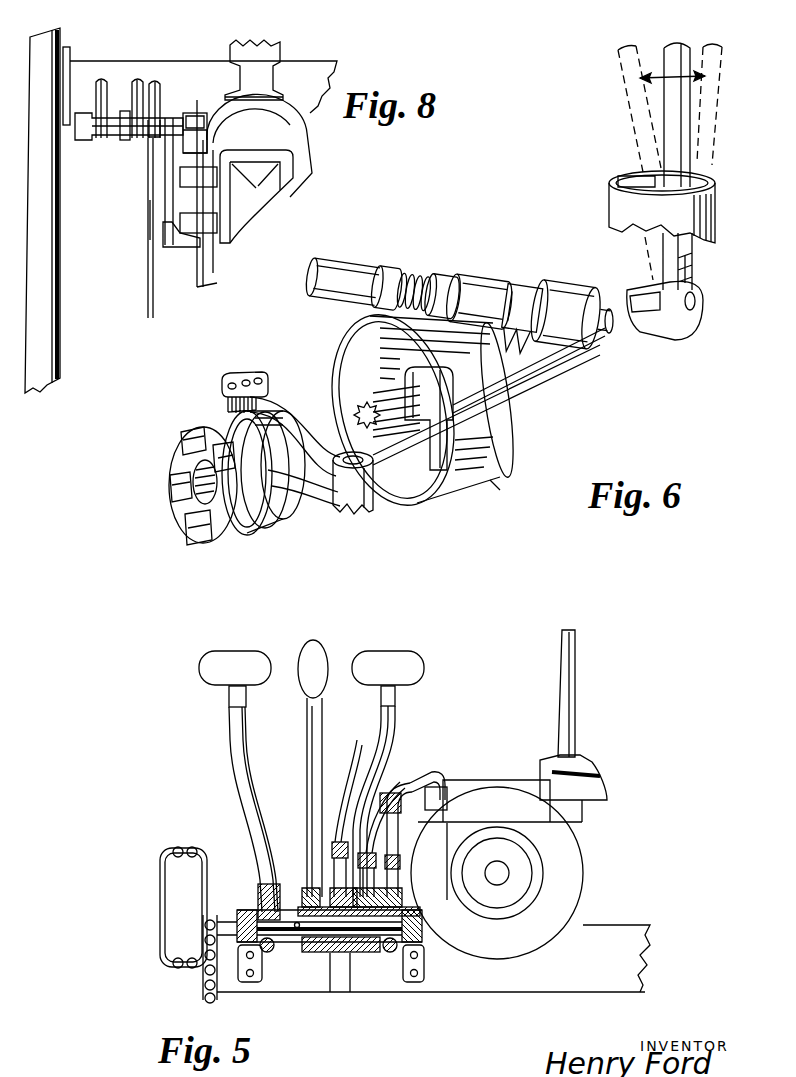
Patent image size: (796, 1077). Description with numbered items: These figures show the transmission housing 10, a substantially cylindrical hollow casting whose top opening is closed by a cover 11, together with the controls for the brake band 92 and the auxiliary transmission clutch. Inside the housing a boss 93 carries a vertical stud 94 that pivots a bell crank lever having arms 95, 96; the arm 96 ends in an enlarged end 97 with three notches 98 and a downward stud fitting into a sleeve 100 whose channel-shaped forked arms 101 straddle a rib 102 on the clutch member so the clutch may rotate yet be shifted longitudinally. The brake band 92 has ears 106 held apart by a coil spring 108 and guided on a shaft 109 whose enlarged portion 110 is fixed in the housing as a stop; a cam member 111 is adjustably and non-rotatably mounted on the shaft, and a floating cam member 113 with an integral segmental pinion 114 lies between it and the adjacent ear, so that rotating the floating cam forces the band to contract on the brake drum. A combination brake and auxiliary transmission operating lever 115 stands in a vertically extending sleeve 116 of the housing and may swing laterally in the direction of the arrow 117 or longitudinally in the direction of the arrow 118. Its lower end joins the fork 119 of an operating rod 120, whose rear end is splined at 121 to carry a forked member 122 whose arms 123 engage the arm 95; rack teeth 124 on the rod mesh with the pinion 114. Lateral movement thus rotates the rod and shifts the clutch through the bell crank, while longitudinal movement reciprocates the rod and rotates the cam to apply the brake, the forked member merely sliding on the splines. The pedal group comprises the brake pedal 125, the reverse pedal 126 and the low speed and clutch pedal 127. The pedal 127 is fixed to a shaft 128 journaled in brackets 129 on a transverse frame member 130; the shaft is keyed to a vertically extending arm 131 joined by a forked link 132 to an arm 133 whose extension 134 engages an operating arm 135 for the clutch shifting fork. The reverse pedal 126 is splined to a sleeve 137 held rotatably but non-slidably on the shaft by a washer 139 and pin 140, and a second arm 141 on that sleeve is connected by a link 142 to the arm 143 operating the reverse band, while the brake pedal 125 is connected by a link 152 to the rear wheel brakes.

In FIG. 8, the transmission housing 10 is at (283, 138).
In FIG. 5, the transmission housing 10 is at (497, 873).
In FIG. 8, the cover 11 is at (256, 196).
In FIG. 5, the cover 11 is at (515, 778).
In FIG. 6, the brake band 92 is at (498, 430).
In FIG. 6, the boss 93 is at (345, 520).
In FIG. 6, the vertical stud 94 is at (332, 452).
In FIG. 6, the arm of bell crank lever 95 is at (395, 505).
In FIG. 6, the arm of bell crank lever 96 is at (318, 462).
In FIG. 6, the enlarged end 97 is at (234, 378).
In FIG. 6, the notches 98 is at (248, 376).
In FIG. 6, the sleeve 100 is at (235, 420).
In FIG. 6, the forked arms 101 is at (222, 430).
In FIG. 6, the rib 102 is at (262, 525).
In FIG. 6, the ears 106 is at (386, 265).
In FIG. 6, the coil spring 108 is at (425, 270).
In FIG. 6, the shaft 109 is at (418, 280).
In FIG. 6, the enlarged portion 110 is at (322, 275).
In FIG. 6, the cam member 111 is at (570, 300).
In FIG. 6, the floating cam member 113 is at (490, 288).
In FIG. 6, the segmental pinion 114 is at (525, 300).
In FIG. 6, the combination brake and auxiliary transmission operating lever 115 is at (692, 128).
In FIG. 5, the combination brake and auxiliary transmission operating lever 115 is at (568, 706).
In FIG. 6, the sleeve 116 is at (700, 180).
In FIG. 6, the arrow 117 is at (652, 75).
In FIG. 6, the arrow 118 is at (706, 74).
In FIG. 6, the fork 119 is at (682, 330).
In FIG. 6, the operating rod 120 is at (560, 358).
In FIG. 6, the splines 121 is at (370, 403).
In FIG. 6, the forked member 122 is at (434, 378).
In FIG. 6, the arms of forked member 123 is at (482, 492).
In FIG. 6, the rack teeth 124 is at (525, 390).
In FIG. 8, the brake pedal 125 is at (155, 80).
In FIG. 5, the brake pedal 125 is at (390, 652).
In FIG. 8, the reverse pedal 126 is at (136, 77).
In FIG. 5, the reverse pedal 126 is at (316, 652).
In FIG. 8, the low speed and clutch pedal 127 is at (98, 78).
In FIG. 5, the low speed and clutch pedal 127 is at (233, 650).
In FIG. 5, the shaft 128 is at (283, 908).
In FIG. 5, the brackets 129 is at (232, 920).
In FIG. 8, the transverse frame member 130 is at (203, 87).
In FIG. 5, the transverse frame member 130 is at (611, 958).
In FIG. 8, the vertically extending arm 131 is at (183, 117).
In FIG. 5, the vertically extending arm 131 is at (390, 790).
In FIG. 8, the forked link 132 is at (147, 213).
In FIG. 5, the forked link 132 is at (396, 800).
In FIG. 8, the arm 133 is at (181, 185).
In FIG. 5, the arm 133 is at (443, 788).
In FIG. 8, the extension 134 is at (190, 118).
In FIG. 8, the operating arm 135 is at (183, 140).
In FIG. 5, the operating arm 135 is at (415, 793).
In FIG. 5, the sleeve 137 is at (325, 953).
In FIG. 5, the washer 139 is at (300, 940).
In FIG. 5, the pin 140 is at (298, 922).
In FIG. 5, the second arm 141 is at (368, 953).
In FIG. 8, the link 142 is at (177, 152).
In FIG. 5, the link 142 is at (381, 800).
In FIG. 8, the arm 143 is at (177, 247).
In FIG. 8, the link 152 is at (147, 303).
In FIG. 5, the link 152 is at (350, 752).